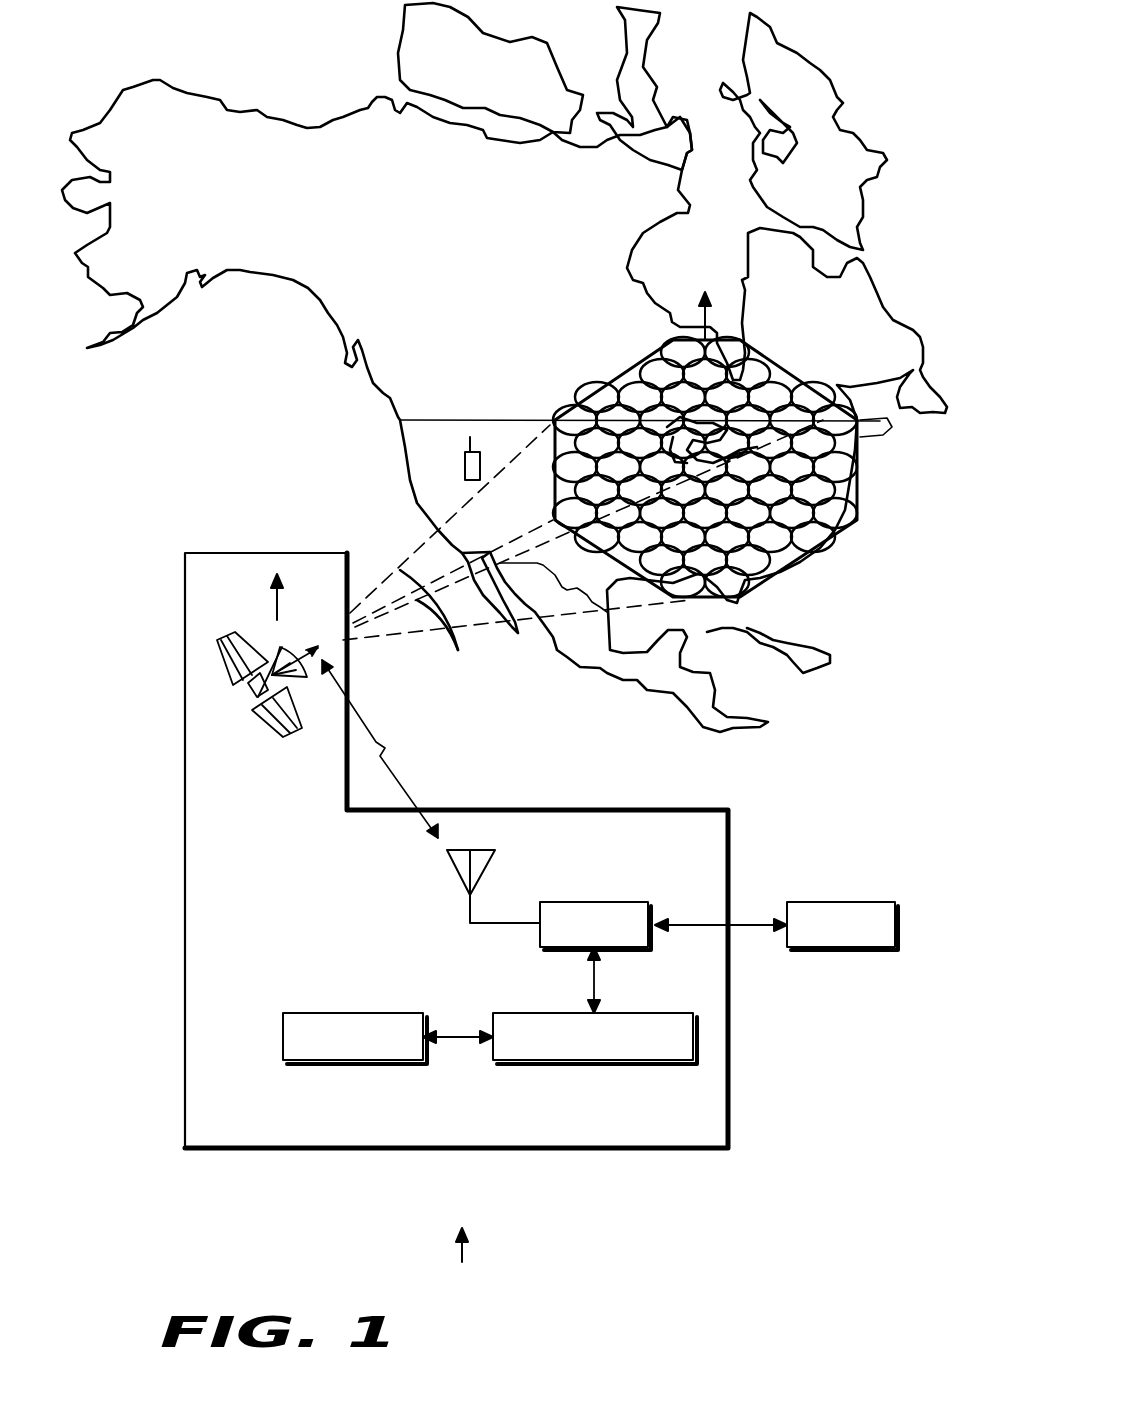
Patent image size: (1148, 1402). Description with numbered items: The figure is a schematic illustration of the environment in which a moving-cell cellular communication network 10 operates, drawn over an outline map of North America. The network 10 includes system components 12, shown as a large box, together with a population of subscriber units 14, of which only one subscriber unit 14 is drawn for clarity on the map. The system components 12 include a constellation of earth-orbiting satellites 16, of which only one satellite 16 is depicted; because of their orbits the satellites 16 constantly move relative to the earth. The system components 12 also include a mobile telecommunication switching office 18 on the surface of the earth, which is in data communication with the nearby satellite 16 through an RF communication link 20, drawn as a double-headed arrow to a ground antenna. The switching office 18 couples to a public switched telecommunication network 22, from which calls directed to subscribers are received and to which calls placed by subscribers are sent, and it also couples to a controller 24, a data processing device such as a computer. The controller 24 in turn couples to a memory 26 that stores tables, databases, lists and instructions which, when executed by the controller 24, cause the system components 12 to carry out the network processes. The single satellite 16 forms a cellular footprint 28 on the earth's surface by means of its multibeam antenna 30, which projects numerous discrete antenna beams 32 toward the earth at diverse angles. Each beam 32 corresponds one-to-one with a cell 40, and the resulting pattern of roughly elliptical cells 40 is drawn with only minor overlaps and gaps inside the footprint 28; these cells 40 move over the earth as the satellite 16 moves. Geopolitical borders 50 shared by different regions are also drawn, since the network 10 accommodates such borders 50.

The communication network 10 is at (461, 1264).
The system components 12 is at (597, 1152).
The subscriber unit 14 is at (462, 462).
The satellite 16 is at (268, 733).
The mobile telecommunication switching office 18 is at (621, 902).
The RF communication link 20 is at (383, 742).
The public switched telecommunication network 22 is at (865, 900).
The controller 24 is at (662, 1013).
The memory 26 is at (330, 1013).
The cellular footprint 28 is at (788, 582).
The multibeam antenna 30 is at (322, 647).
The antenna beam 32 is at (442, 628).
The cell 40 is at (593, 393).
The geopolitical border 50 is at (505, 418).